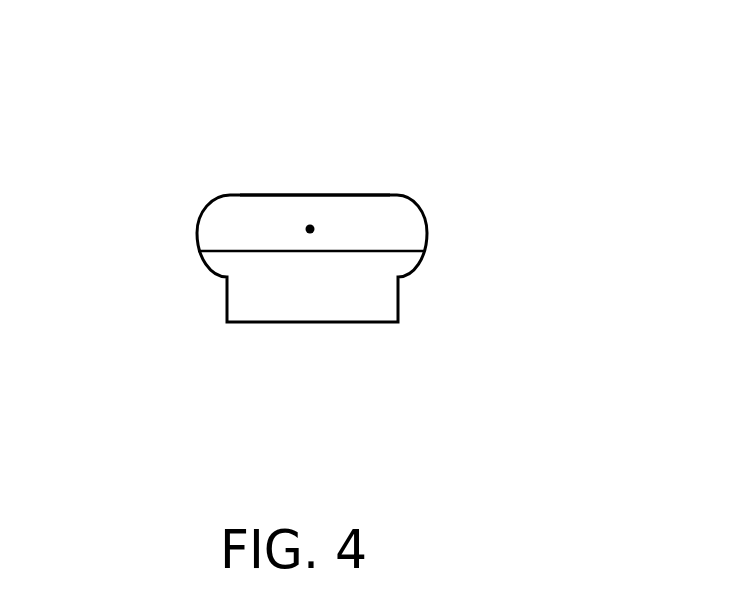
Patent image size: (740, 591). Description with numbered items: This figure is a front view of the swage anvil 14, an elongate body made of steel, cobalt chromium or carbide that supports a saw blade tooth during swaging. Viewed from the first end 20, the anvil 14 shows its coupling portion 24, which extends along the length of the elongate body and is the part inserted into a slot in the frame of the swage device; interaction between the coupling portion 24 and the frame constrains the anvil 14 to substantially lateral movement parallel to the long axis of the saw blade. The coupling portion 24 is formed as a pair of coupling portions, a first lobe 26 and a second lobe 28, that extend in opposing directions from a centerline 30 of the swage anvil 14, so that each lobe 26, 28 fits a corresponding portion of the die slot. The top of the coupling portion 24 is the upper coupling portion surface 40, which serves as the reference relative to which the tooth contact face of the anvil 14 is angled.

The swage anvil 14 is at (430, 64).
The first end 20 is at (180, 303).
The coupling portion 24 is at (423, 220).
The first lobe 26 is at (208, 208).
The second lobe 28 is at (415, 202).
The centerline 30 is at (311, 226).
The upper coupling portion surface 40 is at (272, 185).